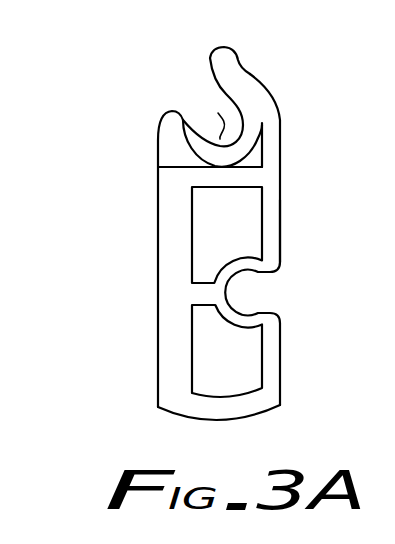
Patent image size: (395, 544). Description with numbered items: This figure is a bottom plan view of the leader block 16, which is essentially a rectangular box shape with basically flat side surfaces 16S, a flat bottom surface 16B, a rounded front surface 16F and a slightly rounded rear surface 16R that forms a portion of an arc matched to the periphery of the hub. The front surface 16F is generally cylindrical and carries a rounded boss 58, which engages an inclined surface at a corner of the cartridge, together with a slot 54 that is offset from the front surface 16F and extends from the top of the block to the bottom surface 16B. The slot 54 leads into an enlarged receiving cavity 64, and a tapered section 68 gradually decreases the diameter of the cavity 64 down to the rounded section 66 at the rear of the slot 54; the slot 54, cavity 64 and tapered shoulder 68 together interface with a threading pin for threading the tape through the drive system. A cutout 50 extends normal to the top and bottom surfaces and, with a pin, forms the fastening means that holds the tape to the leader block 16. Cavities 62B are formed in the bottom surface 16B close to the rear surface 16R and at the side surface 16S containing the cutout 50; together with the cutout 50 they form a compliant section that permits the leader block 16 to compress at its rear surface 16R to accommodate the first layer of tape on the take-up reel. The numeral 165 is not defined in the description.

The leader block 16 is at (150, 350).
The side surfaces 16S is at (157, 282).
The bottom surface 16B is at (168, 396).
The rear surface 16R is at (232, 423).
The front surface 16F is at (257, 87).
The cutout 50 is at (243, 297).
The side edge 165 is at (280, 222).
The rounded boss 58 is at (236, 49).
The slot 54 is at (197, 95).
The tapered section 68 is at (247, 152).
The receiving cavity 64 is at (262, 123).
The rounded section at the rear of the slot 66 is at (209, 117).
The cavities in the bottom surface 62B is at (248, 242).